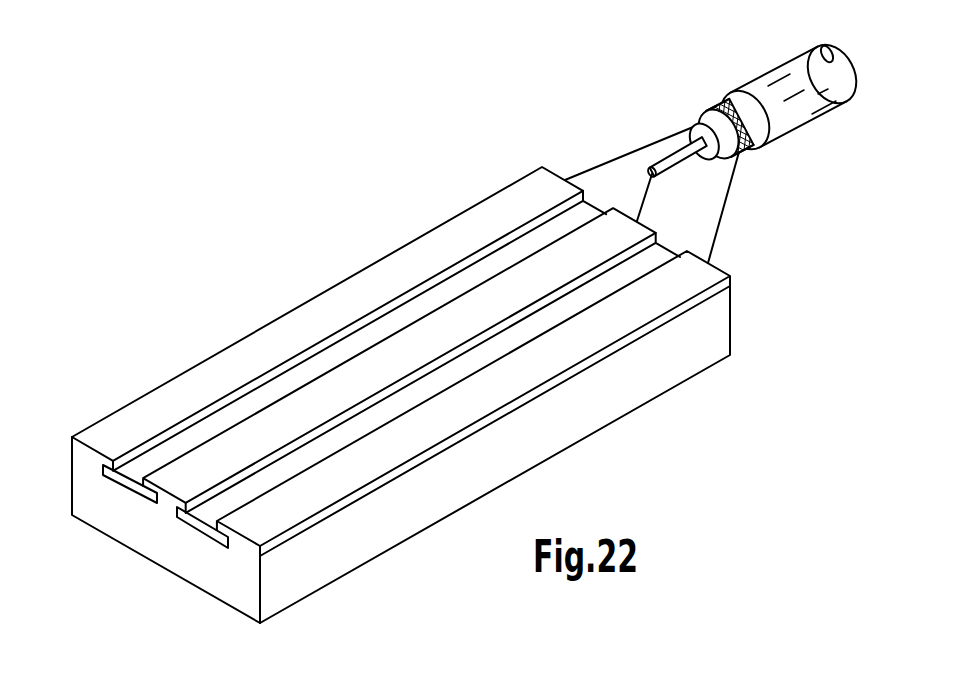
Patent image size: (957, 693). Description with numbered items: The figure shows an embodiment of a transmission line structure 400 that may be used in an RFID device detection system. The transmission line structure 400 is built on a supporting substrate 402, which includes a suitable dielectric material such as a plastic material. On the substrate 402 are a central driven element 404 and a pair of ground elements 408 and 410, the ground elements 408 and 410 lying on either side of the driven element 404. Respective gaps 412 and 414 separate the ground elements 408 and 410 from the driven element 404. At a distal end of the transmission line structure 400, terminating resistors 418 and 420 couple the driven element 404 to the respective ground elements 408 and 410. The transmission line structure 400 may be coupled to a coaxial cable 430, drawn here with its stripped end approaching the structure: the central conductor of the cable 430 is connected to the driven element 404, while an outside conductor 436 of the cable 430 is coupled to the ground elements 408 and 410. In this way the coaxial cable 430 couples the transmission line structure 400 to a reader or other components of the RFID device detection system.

The transmission line structure 400 is at (405, 165).
The supporting substrate 402 is at (85, 488).
The central driven element 404 is at (168, 500).
The ground element 408 is at (78, 448).
The ground element 410 is at (261, 552).
The gap 412 is at (610, 183).
The gap 414 is at (690, 238).
The terminating resistor 418 is at (122, 506).
The terminating resistor 420 is at (204, 552).
The coaxial cable 430 is at (755, 55).
The outside conductor 436 is at (717, 110).